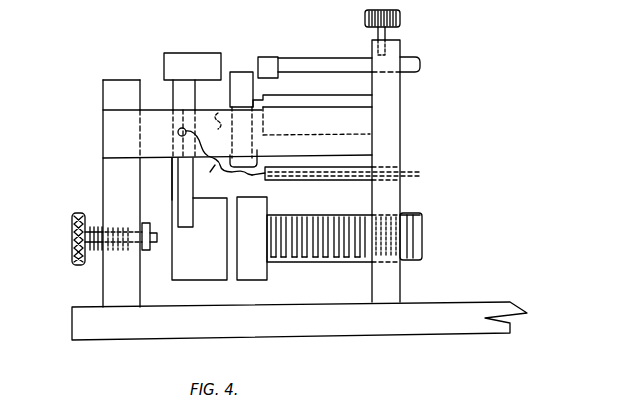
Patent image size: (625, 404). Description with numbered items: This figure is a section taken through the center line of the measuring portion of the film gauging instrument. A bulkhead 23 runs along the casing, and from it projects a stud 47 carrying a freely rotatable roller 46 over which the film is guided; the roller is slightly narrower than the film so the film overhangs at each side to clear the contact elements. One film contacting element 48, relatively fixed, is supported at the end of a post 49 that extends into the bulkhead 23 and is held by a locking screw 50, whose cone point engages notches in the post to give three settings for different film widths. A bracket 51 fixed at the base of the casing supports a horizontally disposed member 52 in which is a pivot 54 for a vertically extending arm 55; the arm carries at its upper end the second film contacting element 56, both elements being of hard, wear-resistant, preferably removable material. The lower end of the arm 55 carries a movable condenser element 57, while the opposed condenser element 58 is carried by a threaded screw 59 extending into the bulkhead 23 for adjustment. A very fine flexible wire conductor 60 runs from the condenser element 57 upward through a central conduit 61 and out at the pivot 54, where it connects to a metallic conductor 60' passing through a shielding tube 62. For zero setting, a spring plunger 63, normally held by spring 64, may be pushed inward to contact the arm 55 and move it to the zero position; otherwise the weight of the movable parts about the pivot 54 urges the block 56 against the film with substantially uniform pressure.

The bulkhead 23 is at (390, 132).
The roller 46 is at (241, 80).
The stud 47 is at (307, 98).
The film contacting element 48 is at (270, 58).
The post 49 is at (317, 65).
The locking screw 50 is at (387, 33).
The bracket 51 is at (113, 185).
The horizontally disposed member 52 is at (153, 112).
The pivot 54 is at (185, 129).
The arm 55 is at (173, 175).
The film contacting element 56 is at (197, 63).
The movable condenser element 57 is at (207, 270).
The condenser element 58 is at (267, 268).
The threaded screw 59 is at (417, 212).
The conductor 60 is at (207, 181).
The metallic conductor 60' is at (250, 186).
The central conduit 61 is at (183, 200).
The shielding tube 62 is at (405, 167).
The spring plunger 63 is at (105, 247).
The spring 64 is at (103, 228).